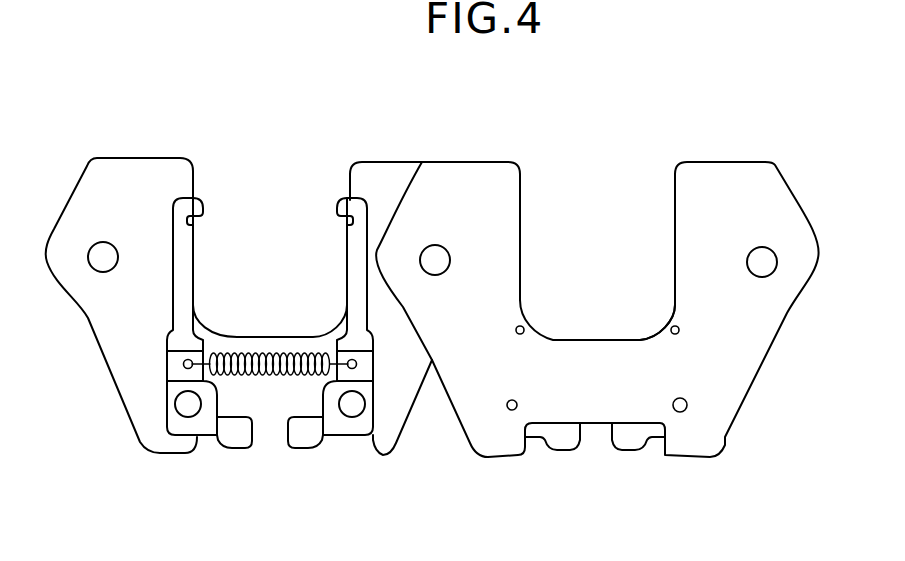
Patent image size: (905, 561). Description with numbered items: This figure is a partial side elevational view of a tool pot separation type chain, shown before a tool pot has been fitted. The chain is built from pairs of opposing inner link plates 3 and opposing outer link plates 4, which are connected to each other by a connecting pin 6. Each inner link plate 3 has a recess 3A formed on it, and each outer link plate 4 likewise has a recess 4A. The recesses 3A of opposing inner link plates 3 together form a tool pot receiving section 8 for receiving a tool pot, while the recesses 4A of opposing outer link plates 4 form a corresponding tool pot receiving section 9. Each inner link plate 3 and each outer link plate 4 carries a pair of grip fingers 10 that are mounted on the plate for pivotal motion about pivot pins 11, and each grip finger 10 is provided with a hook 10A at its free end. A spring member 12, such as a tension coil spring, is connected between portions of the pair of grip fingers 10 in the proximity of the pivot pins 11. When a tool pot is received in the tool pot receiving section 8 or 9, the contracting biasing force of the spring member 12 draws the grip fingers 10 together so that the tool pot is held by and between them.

The inner link plate 3 is at (383, 175).
The recess 3A is at (348, 196).
The outer link plate 4 is at (500, 180).
The recess 4A is at (520, 222).
The connecting pin 6 is at (435, 248).
The tool pot receiving section 8 is at (262, 226).
The tool pot receiving section 9 is at (600, 257).
The grip finger 10 is at (183, 285).
The hook 10A is at (200, 212).
The pivot pin 11 is at (183, 407).
The spring member 12 is at (273, 360).